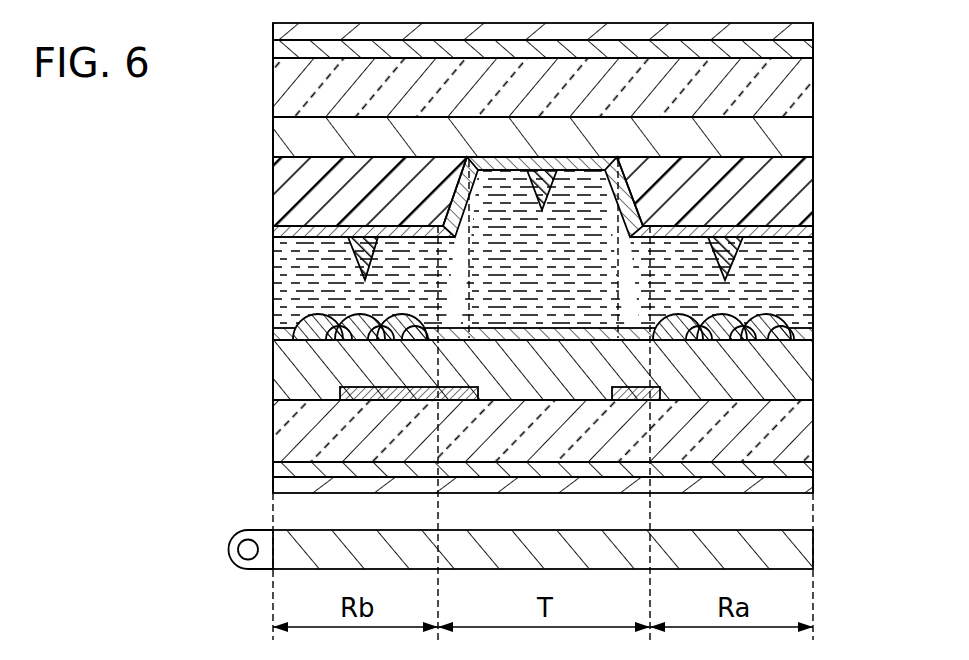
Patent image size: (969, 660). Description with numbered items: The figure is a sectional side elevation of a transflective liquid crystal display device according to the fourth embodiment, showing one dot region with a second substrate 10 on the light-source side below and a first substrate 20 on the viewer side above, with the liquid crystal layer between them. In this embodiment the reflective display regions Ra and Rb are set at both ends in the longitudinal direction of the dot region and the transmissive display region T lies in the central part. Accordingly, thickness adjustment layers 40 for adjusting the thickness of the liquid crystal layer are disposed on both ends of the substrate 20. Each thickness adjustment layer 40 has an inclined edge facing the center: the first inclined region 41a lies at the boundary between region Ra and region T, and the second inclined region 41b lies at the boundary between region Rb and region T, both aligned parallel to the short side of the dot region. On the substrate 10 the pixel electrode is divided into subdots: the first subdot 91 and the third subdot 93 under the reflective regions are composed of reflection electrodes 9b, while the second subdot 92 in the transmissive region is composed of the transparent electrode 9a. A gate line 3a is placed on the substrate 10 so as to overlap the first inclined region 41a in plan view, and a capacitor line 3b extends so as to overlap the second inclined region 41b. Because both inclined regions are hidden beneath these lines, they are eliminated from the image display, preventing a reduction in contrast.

The first substrate 20 is at (236, 23).
The second substrate 10 is at (236, 308).
The thickness adjustment layer 40 is at (808, 172).
The first inclined region 41a is at (621, 218).
The second inclined region 41b is at (466, 218).
The transparent electrode 9a is at (573, 326).
The reflection electrode 9b is at (396, 314).
The first subdot 91 is at (326, 298).
The second subdot 92 is at (511, 320).
The third subdot 93 is at (686, 308).
The gate line 3a is at (661, 393).
The capacitor line 3b is at (479, 393).